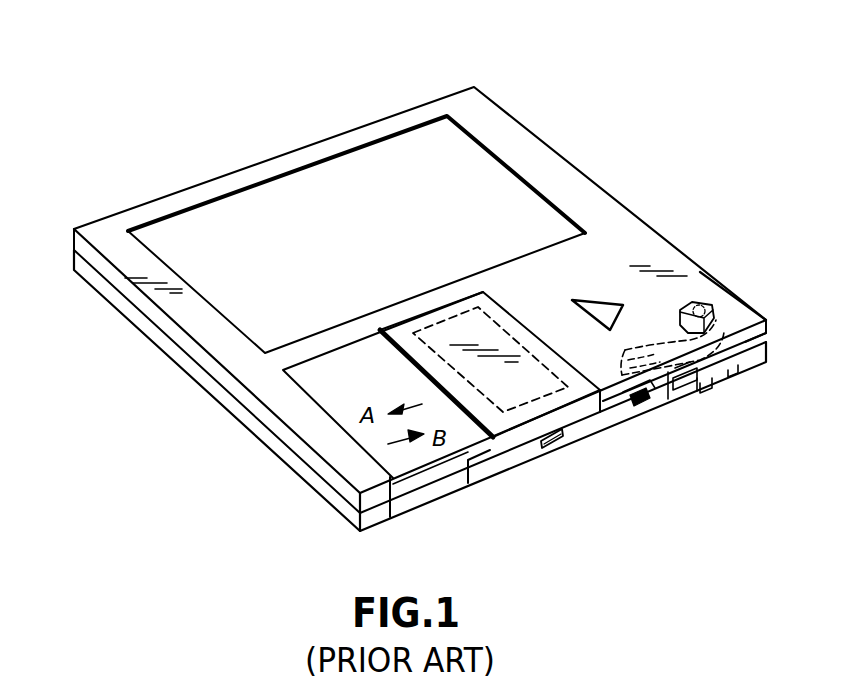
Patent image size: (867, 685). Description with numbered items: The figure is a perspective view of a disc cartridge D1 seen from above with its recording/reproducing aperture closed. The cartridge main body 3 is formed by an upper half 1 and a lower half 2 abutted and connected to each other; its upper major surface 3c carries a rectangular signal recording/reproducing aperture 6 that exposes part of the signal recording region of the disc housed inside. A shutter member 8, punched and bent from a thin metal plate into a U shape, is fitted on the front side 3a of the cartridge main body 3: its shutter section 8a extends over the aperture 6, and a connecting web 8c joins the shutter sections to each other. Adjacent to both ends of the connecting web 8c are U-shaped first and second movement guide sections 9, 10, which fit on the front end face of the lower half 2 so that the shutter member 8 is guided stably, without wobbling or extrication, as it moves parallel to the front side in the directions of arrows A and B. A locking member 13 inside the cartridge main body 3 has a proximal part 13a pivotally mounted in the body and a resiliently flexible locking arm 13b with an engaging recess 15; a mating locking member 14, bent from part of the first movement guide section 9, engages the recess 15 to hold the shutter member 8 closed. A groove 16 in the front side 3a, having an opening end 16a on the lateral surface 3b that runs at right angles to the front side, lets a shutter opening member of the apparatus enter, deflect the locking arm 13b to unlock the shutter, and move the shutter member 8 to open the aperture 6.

The disc cartridge D1 is at (506, 97).
The upper half 1 is at (75, 248).
The lower half 2 is at (80, 258).
The cartridge main body 3 is at (48, 190).
The front side 3a is at (750, 372).
The lateral surface 3b is at (740, 307).
The upper major surface 3c is at (560, 170).
The signal recording/reproducing aperture 6 is at (440, 326).
The shutter member 8 is at (525, 457).
The shutter section 8a is at (500, 303).
The connecting web 8c is at (582, 427).
The first movement guide section 9 is at (615, 413).
The second movement guide section 10 is at (480, 475).
The locking member 13 is at (713, 307).
The proximal part 13a is at (690, 303).
The locking arm 13b is at (650, 348).
The mating locking member 14 is at (640, 400).
The engaging recess 15 is at (680, 372).
The groove 16 is at (702, 375).
The opening end 16a is at (763, 338).